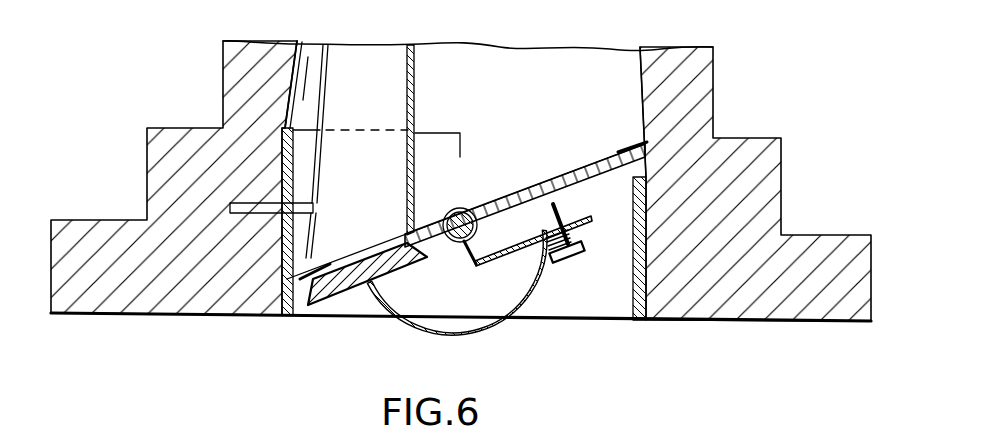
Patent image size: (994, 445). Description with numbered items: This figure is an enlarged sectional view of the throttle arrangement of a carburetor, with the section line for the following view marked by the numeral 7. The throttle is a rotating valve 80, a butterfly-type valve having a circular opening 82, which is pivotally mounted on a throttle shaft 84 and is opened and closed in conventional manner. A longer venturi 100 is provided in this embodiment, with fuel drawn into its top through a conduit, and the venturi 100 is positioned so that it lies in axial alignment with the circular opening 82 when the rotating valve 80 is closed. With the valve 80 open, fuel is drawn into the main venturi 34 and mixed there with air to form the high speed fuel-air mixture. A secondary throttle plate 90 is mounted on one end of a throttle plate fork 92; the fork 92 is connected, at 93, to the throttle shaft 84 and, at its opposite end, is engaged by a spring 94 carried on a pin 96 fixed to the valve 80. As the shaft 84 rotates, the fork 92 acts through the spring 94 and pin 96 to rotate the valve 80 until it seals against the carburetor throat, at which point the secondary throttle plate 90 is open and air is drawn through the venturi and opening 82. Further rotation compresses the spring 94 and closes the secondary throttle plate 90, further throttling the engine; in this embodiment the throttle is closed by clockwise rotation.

The venturi 34 is at (300, 80).
The longer venturi 100 is at (416, 108).
The rotating valve 80 is at (530, 152).
The circular opening 82 is at (420, 243).
The throttle shaft 84 is at (471, 186).
The secondary throttle plate 90 is at (334, 289).
The throttle plate fork 92 is at (418, 330).
The connection of fork to throttle shaft 93 is at (457, 322).
The spring 94 is at (570, 246).
The pin 96 is at (562, 212).
The section line 7- 7 is at (634, 136).